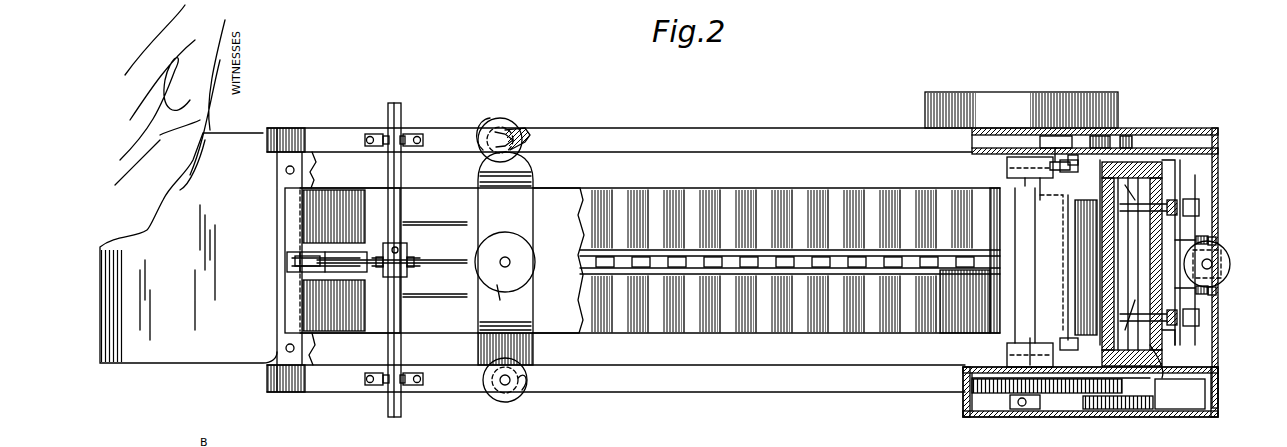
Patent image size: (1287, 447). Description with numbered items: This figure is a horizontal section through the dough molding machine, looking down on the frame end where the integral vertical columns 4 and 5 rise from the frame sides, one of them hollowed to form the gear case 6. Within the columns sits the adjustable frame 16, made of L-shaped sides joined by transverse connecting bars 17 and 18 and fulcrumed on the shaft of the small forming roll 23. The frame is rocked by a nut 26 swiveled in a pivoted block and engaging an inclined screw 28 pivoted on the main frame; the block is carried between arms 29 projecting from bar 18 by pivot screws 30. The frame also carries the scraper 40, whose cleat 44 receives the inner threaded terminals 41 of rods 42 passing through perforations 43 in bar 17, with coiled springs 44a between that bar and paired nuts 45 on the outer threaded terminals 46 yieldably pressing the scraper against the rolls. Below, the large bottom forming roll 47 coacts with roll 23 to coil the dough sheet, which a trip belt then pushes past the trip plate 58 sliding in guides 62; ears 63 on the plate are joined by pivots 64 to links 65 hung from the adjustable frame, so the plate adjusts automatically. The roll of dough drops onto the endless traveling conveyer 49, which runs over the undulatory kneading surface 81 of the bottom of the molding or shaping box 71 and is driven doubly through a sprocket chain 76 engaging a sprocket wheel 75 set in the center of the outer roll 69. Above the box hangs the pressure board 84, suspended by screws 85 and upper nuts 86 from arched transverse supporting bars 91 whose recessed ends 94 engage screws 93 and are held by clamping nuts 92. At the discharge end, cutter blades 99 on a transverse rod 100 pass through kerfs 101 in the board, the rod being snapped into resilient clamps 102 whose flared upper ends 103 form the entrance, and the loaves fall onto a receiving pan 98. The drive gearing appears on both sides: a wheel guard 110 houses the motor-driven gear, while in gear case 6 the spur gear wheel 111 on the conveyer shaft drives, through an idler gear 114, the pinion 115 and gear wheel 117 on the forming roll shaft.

The vertical column 4 is at (1190, 133).
The vertical column 5 is at (1220, 402).
The gear case 6 is at (990, 410).
The adjustable frame 16 is at (1105, 140).
The transverse connecting bar 17 is at (1160, 212).
The transverse connecting bar 18 is at (1170, 335).
The forming roll 23 is at (1130, 298).
The nut 26 is at (1212, 264).
The screw 28 is at (1232, 255).
The arm 29 is at (1210, 240).
The pivot screw 30 is at (1218, 240).
The scraper 40 is at (1078, 238).
The inner threaded terminal 41 is at (1105, 213).
The rod 42 is at (1128, 140).
The perforation 43 is at (1155, 208).
The transverse cleat 44 is at (1100, 265).
The coiled spring 44a is at (1150, 208).
The nut 45 is at (1182, 205).
The outer threaded terminal 46 is at (1200, 208).
The bottom forming roll 47 is at (1125, 288).
The endless traveling conveyer 49 is at (285, 215).
The trip plate 58 is at (1039, 265).
The guide 62 is at (1007, 165).
The ear 63 is at (1058, 176).
The pivot 64 is at (1041, 276).
The link 65 is at (1081, 253).
The outer roll 69 is at (283, 190).
The molding or shaping box 71 is at (790, 260).
The sprocket wheel 75 is at (290, 262).
The sprocket chain 76 is at (620, 267).
The undulatory kneading surface 81 is at (860, 203).
The pressure board 84 is at (550, 205).
The screw 85 is at (509, 252).
The upper nut 86 is at (499, 303).
The transverse supporting bar 91 is at (505, 258).
The clamping nut 92 is at (490, 118).
The screw 93 is at (508, 128).
The recess 94 is at (530, 135).
The receiving pan 98 is at (188, 248).
The blade 99 is at (420, 263).
The transverse rod 100 is at (388, 107).
The kerf 101 is at (445, 225).
The clamp 102 is at (386, 147).
The upper end of jaw 103 is at (383, 137).
The wheel guard 110 is at (1000, 103).
The spur gear wheel 111 is at (965, 398).
The idler gear 114 is at (1080, 415).
The pinion 115 is at (1155, 395).
The gear wheel 117 is at (1145, 415).